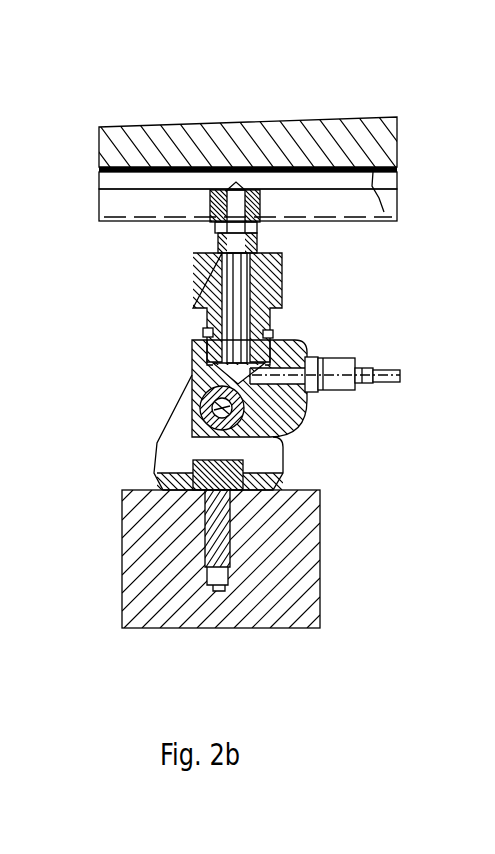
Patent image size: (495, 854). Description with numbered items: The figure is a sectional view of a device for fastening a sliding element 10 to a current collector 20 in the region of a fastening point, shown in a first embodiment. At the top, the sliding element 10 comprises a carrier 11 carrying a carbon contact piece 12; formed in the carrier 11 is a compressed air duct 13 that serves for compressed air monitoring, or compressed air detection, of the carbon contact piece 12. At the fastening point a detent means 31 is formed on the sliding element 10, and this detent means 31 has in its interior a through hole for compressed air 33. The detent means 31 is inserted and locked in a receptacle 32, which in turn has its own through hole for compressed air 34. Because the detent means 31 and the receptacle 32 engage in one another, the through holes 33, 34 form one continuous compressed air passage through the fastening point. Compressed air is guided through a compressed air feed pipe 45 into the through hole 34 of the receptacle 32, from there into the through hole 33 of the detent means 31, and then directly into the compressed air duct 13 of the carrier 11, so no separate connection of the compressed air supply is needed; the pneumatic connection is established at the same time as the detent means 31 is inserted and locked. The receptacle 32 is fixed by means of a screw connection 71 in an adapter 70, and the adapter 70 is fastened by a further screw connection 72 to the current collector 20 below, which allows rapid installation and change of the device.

The sliding element 10 is at (232, 148).
The carrier 11 is at (115, 200).
The carbon contact piece 12 is at (118, 154).
The compressed air duct 13 is at (397, 223).
The current collector 20 is at (345, 553).
The detent means 31 is at (257, 250).
The receptacle 32 is at (292, 297).
The through hole for compressed air 33 is at (263, 283).
The through hole for compressed air 34 is at (268, 323).
The compressed air feed pipe 45 is at (400, 375).
The adapter 70 is at (177, 456).
The screw connection 71 is at (199, 407).
The screw connection 72 is at (243, 462).